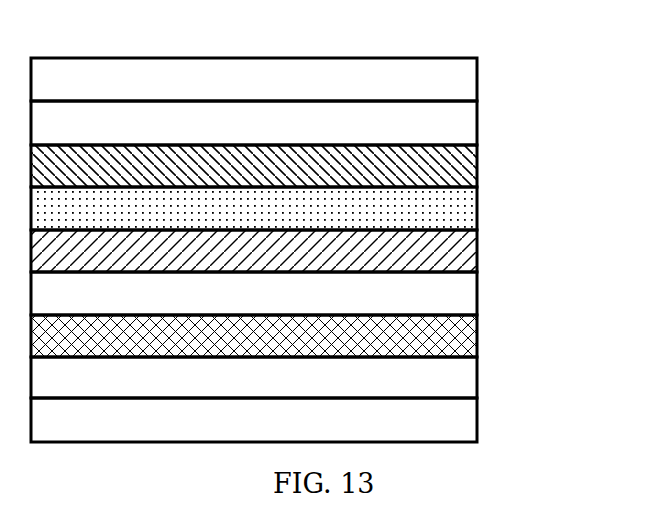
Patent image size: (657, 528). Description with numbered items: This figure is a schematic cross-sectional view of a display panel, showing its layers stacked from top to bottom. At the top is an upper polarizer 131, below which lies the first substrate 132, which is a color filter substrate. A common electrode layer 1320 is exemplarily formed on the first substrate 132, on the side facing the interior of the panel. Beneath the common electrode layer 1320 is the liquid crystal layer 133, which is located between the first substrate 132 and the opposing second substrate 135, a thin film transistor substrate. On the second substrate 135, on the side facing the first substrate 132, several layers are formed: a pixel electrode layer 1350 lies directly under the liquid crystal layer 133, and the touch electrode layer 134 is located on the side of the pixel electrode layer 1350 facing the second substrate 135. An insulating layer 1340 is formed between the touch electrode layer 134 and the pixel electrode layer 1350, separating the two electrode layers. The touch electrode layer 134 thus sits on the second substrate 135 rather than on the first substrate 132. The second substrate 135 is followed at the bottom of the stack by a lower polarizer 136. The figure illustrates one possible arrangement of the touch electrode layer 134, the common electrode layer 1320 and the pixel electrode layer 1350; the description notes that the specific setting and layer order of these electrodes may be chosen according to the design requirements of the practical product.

The upper polarizer 131 is at (457, 75).
The first substrate 132 is at (457, 119).
The common electrode layer 1320 is at (477, 170).
The liquid crystal layer 133 is at (457, 213).
The pixel electrode layer 1350 is at (457, 257).
The insulating layer 1340 is at (457, 296).
The touch electrode layer 134 is at (477, 342).
The second substrate 135 is at (457, 382).
The lower polarizer 136 is at (457, 427).